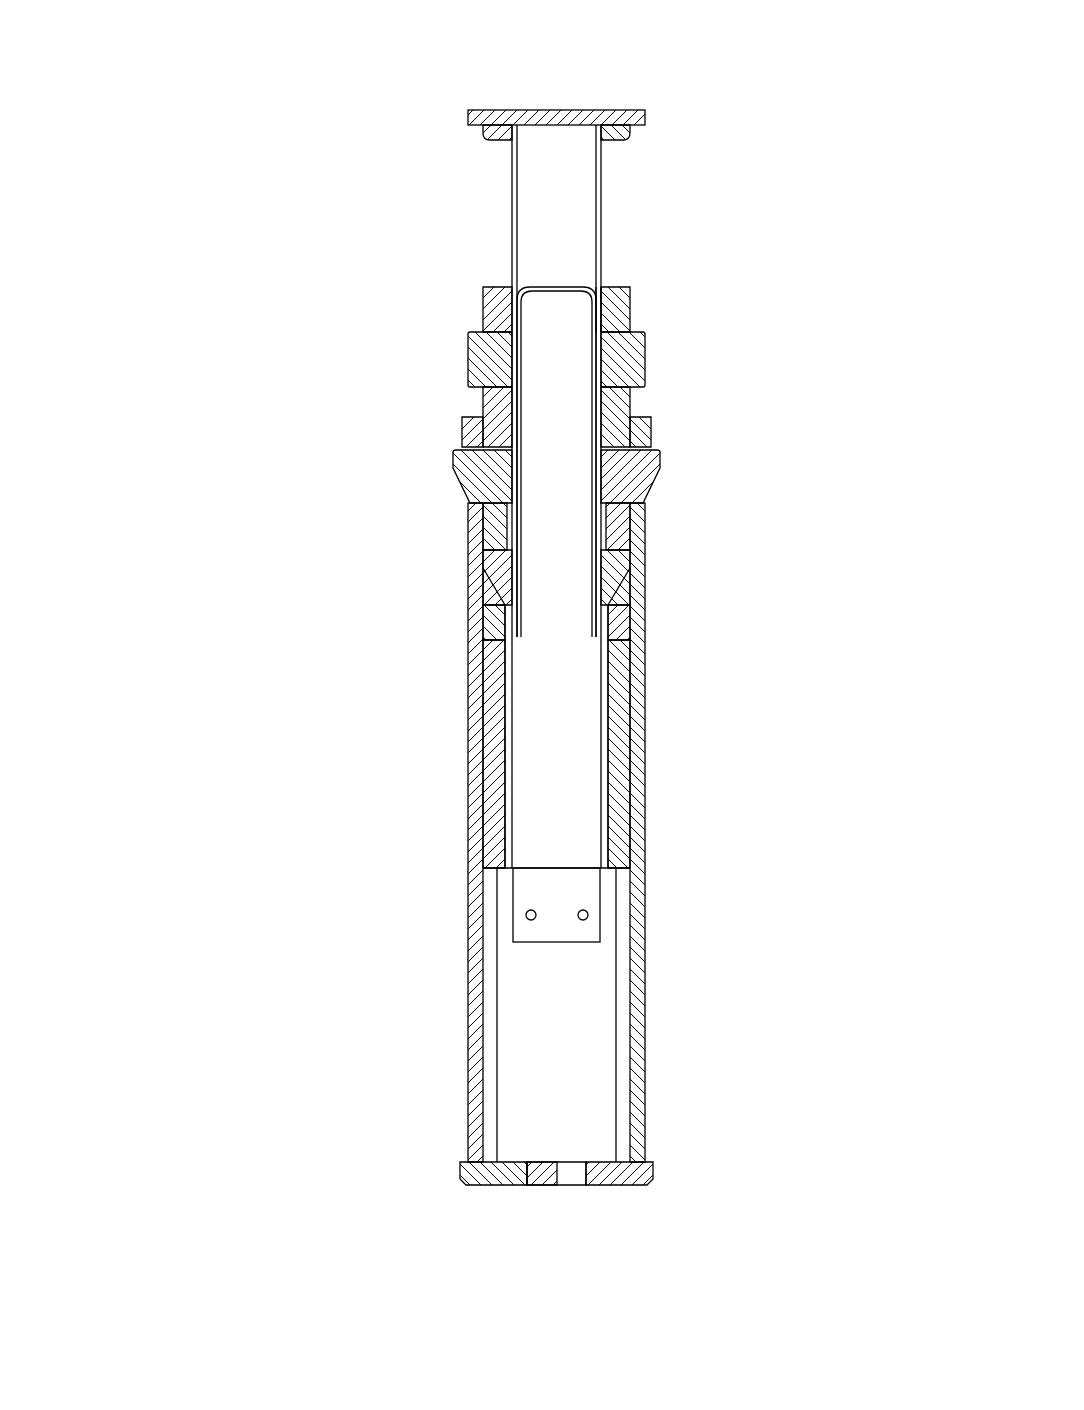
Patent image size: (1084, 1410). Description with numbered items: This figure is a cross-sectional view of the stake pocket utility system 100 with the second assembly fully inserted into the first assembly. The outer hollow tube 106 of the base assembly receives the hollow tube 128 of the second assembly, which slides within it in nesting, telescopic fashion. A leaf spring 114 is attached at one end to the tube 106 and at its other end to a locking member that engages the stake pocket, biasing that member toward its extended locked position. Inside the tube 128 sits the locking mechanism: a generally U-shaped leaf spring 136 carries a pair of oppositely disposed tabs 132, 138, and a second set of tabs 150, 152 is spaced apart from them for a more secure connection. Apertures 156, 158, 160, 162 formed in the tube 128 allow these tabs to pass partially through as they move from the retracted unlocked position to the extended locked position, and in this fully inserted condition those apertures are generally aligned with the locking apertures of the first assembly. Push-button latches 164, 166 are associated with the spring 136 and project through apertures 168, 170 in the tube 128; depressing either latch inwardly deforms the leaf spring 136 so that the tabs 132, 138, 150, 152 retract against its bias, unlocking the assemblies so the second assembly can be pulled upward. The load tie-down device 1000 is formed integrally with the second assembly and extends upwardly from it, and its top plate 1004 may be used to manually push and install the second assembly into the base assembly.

The stake pocket utility system 100 is at (228, 268).
The load tie-down device 1000 is at (743, 220).
The top plate 1004 is at (605, 110).
The hollow tube 106 is at (637, 830).
The leaf spring 114 is at (530, 900).
The hollow tube 128 is at (617, 765).
The tab 132 is at (470, 460).
The leaf spring 136 is at (560, 288).
The tab 138 is at (637, 470).
The tab 150 is at (477, 567).
The tab 152 is at (645, 577).
The aperture 156 is at (477, 500).
The aperture 158 is at (643, 502).
The aperture 160 is at (477, 600).
The aperture 162 is at (643, 597).
The latch 164 is at (468, 355).
The latch 166 is at (630, 378).
The aperture 168 is at (483, 327).
The aperture 170 is at (630, 328).